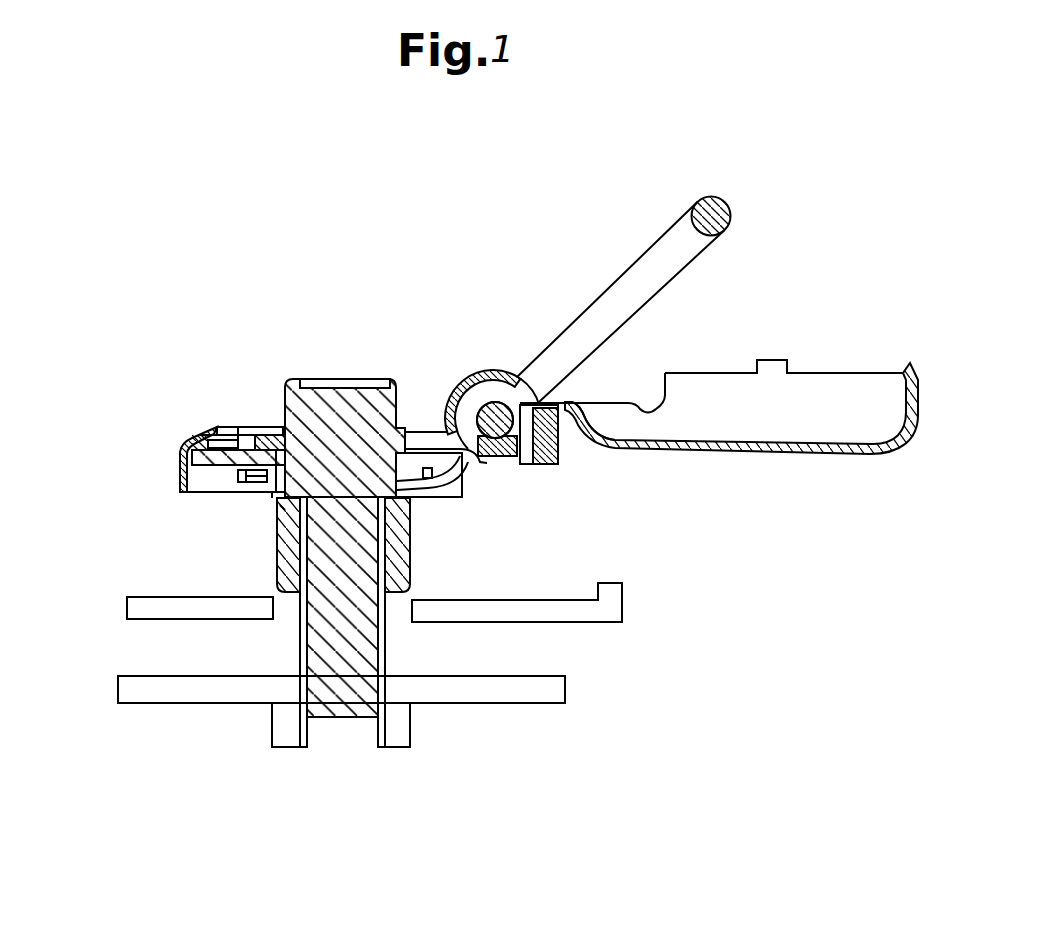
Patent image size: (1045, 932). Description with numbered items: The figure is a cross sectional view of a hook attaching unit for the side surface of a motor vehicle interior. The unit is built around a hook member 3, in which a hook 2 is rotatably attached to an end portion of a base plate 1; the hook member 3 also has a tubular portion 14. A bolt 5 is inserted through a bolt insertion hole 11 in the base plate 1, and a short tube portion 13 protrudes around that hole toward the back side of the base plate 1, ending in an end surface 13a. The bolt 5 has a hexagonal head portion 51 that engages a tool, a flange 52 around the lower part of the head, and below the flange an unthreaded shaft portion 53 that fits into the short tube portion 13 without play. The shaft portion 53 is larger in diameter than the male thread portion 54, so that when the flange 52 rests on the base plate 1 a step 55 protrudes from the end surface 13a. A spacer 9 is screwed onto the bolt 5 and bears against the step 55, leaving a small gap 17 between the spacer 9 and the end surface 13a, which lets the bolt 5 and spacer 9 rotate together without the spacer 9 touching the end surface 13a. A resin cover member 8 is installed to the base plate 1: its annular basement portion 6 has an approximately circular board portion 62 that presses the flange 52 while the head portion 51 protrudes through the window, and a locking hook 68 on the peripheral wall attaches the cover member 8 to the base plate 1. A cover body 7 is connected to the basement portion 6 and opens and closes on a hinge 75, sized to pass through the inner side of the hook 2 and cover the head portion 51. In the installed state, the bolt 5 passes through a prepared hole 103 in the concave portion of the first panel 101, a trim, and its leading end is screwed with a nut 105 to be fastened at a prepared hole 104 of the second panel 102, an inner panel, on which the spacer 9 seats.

The base plate 1 is at (185, 443).
The hook 2 is at (730, 207).
The hook member 3 is at (517, 446).
The bolt 5 is at (385, 380).
The annular basement portion 6 is at (207, 432).
The cover body 7 is at (815, 398).
The cover member 8 is at (241, 428).
The spacer 9 is at (400, 555).
The bolt insertion hole 11 is at (428, 420).
The short tube portion 13 is at (430, 480).
The end surface 13a is at (272, 497).
The tubular portion 14 is at (507, 376).
The small gap 17 is at (420, 497).
The head portion 51 is at (348, 405).
The flange 52 is at (268, 440).
The shaft portion 53 is at (290, 480).
The male thread portion 54 is at (383, 653).
The step 55 is at (285, 505).
The board portion 62 is at (224, 430).
The locking hook 68 is at (240, 480).
The hinge 75 is at (572, 403).
The first panel (trim) 101 is at (530, 610).
The second panel (inner panel) 102 is at (547, 692).
The prepared hole 103 is at (290, 615).
The prepared hole 104 is at (372, 688).
The nut 105 is at (398, 731).